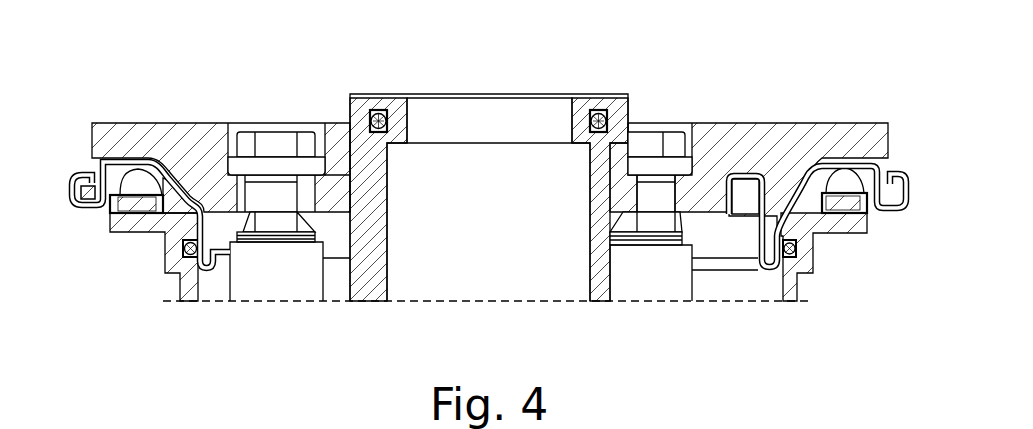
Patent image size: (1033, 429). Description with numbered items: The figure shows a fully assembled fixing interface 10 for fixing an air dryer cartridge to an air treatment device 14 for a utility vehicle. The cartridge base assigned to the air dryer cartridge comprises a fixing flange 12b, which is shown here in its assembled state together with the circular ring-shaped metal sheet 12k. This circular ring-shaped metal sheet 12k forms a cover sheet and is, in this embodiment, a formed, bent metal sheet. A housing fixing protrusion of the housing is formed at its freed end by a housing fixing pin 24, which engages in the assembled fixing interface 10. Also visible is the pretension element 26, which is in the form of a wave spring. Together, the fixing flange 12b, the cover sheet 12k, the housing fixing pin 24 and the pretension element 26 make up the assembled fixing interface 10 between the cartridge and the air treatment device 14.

The fixing interface 10 is at (237, 110).
The fixing flange 12b is at (800, 148).
The circular ring-shaped metal sheet 12k is at (740, 222).
The air treatment device 14 is at (175, 258).
The housing fixing pin 24 is at (268, 217).
The pretension element 26 is at (837, 203).